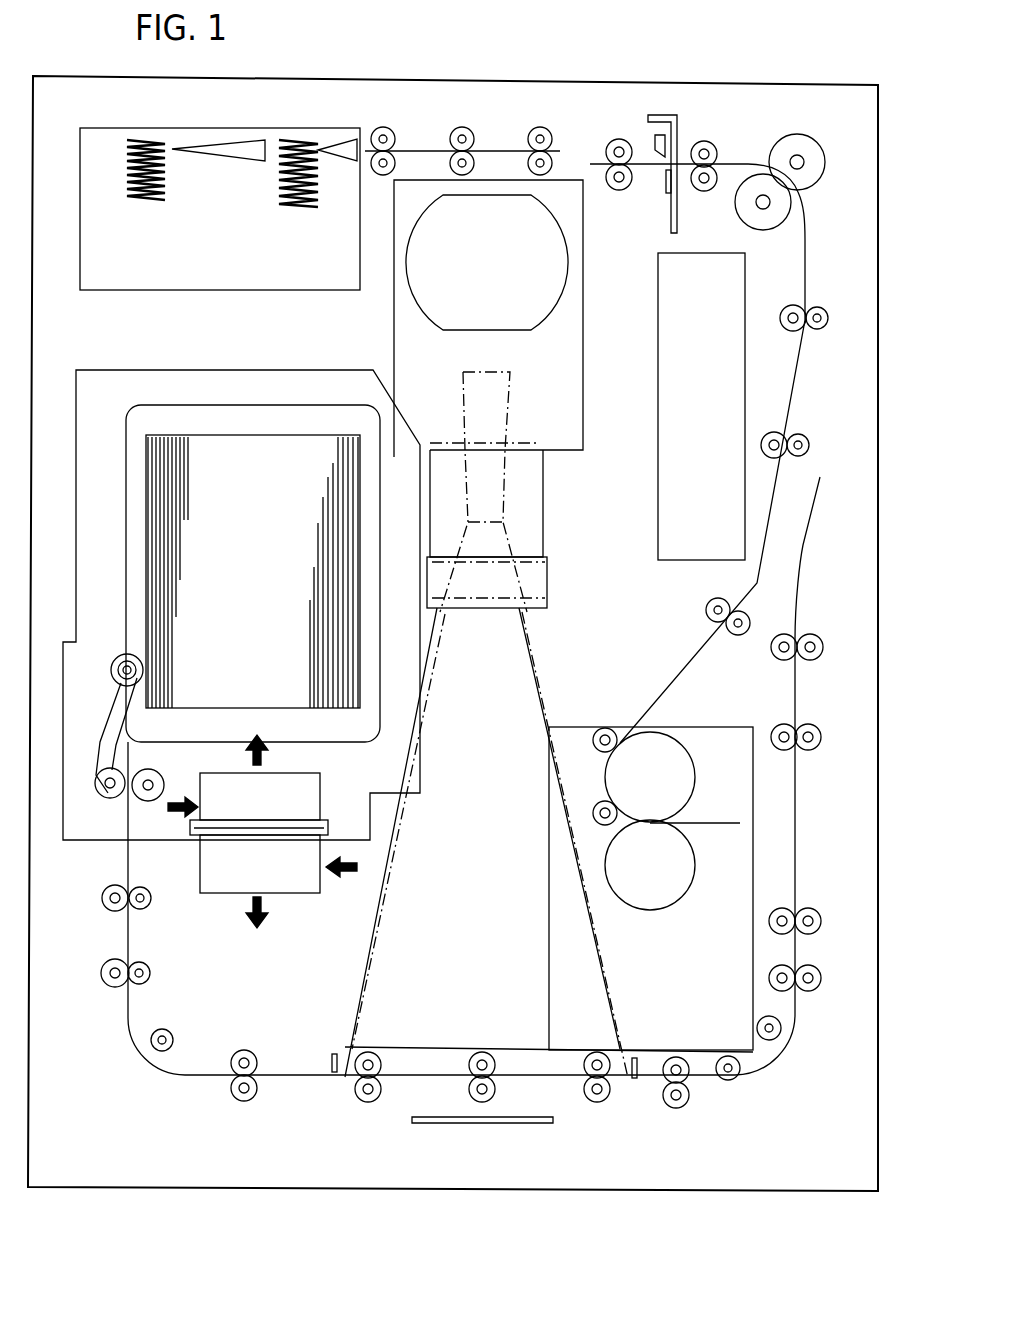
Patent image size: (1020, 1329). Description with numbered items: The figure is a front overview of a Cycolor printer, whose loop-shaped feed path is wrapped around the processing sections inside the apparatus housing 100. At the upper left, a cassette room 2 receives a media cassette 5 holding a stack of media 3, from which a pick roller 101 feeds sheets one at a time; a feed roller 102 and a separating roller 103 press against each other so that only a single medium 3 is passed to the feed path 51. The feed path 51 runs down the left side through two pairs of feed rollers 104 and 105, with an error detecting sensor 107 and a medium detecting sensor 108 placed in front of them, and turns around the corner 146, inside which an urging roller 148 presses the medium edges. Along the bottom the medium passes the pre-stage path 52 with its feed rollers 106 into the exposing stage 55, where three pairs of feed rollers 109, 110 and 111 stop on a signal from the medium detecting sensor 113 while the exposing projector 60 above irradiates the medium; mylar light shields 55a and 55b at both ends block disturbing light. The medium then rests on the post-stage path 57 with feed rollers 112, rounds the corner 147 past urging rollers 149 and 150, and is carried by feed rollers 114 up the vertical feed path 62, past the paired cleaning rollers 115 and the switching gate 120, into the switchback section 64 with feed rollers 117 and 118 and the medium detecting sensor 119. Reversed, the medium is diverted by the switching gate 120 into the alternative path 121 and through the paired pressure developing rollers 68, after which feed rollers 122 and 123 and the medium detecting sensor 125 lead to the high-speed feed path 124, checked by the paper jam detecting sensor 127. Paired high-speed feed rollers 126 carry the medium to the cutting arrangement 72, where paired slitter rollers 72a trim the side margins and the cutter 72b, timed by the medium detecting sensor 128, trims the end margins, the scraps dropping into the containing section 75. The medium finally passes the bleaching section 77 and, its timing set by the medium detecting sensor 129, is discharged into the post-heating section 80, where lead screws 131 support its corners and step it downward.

The apparatus housing 100 is at (320, 78).
The post-heating section 80 is at (271, 294).
The lead screws 131 is at (165, 188).
The cassette room 2 is at (128, 372).
The media 3 is at (192, 455).
The media cassette 5 is at (290, 405).
The pick roller 101 is at (113, 671).
The feed roller 102 is at (104, 797).
The separating roller 103 is at (185, 765).
The paired feed rollers 104 is at (144, 892).
The paired feed rollers 105 is at (146, 963).
The paired feed rollers 106 is at (250, 1055).
The error detecting sensor 107 is at (118, 873).
The medium detecting sensor 108 is at (118, 948).
The paired feed rollers 109 is at (356, 1106).
The paired feed rollers 110 is at (480, 1052).
The paired feed rollers 111 is at (608, 1103).
The paired feed rollers 112 is at (666, 1106).
The medium detecting sensor 113 is at (556, 1100).
The paired feed rollers 114 is at (820, 966).
The paired cleaning rollers 115 is at (818, 908).
The paired feed rollers 117 is at (782, 724).
The paired feed rollers 118 is at (783, 661).
The medium detecting sensor 119 is at (816, 707).
The switching gate 120 is at (758, 843).
The alternative path 121 is at (705, 820).
The paired feed rollers 122 is at (706, 604).
The paired feed rollers 123 is at (762, 447).
The high-speed feed path 124 is at (792, 418).
The medium detecting sensor 125 is at (698, 630).
The paired high-speed feed rollers 126 is at (407, 113).
The paper jam detecting sensor 127 is at (789, 353).
The medium detecting sensor 128 is at (740, 157).
The medium detecting sensor 129 is at (417, 160).
The corner 146 is at (142, 1065).
The corner 147 is at (784, 1062).
The urging roller 148 is at (170, 1030).
The urging roller 149 is at (735, 1082).
The urging roller 150 is at (783, 1030).
The feed path 51 is at (128, 1022).
The pre-stage path 52 is at (210, 1078).
The exposing stage 55 is at (410, 1088).
The mylar light shield 55a is at (332, 1050).
The mylar light shield 55b is at (640, 1058).
The post-stage path 57 is at (738, 1080).
The exposing projector 60 is at (550, 506).
The feed path 62 is at (795, 955).
The switchback section 64 is at (900, 722).
The paired pressure developing rollers 68 is at (590, 772).
The cutting arrangement 72 is at (731, 108).
The paired slitter rollers 72a is at (791, 136).
The cutter 72b is at (666, 185).
The containing section 75 is at (657, 380).
The bleaching section 77 is at (446, 114).